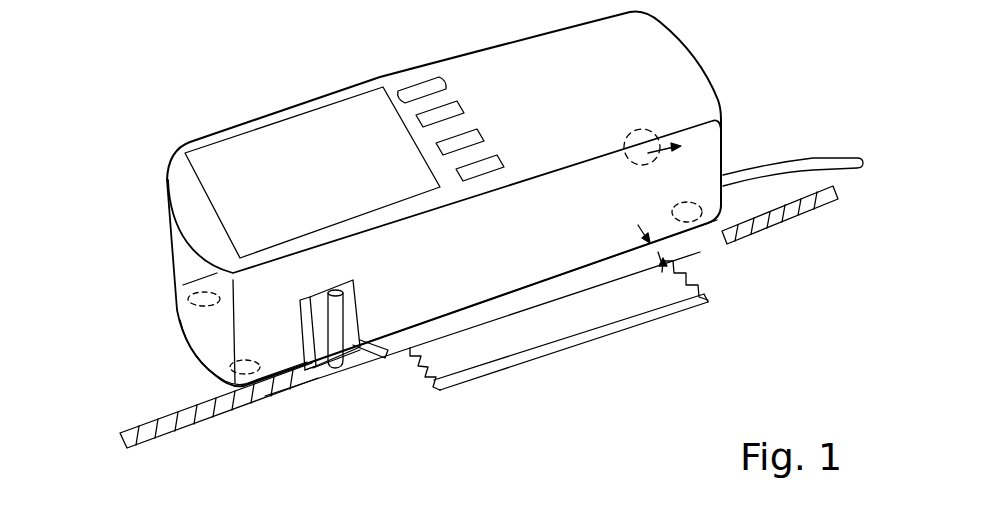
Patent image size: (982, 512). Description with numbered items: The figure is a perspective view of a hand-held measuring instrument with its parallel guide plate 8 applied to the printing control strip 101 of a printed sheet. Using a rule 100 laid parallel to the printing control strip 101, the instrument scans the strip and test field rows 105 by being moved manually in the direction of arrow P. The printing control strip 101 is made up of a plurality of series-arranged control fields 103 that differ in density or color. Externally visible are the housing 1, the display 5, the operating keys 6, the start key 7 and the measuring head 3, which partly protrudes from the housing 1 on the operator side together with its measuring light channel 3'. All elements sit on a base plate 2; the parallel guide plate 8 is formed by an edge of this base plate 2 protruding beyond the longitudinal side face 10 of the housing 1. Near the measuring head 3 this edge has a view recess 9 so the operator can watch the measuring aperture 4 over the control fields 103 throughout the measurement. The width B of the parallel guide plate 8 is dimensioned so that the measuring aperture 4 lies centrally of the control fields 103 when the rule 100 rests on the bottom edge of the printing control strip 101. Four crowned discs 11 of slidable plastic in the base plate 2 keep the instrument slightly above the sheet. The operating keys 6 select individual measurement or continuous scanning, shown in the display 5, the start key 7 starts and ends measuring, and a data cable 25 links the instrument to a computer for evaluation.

The housing 1 is at (658, 58).
The base plate 2 is at (203, 353).
The measuring head 3 is at (373, 309).
The measuring light channel 3' is at (383, 357).
The measuring aperture 4 is at (345, 372).
The display 5 is at (258, 165).
The operating keys 6 is at (485, 157).
The start key 7 is at (428, 84).
The parallel guide plate 8 is at (467, 317).
The view recess 9 is at (323, 373).
The longitudinal side face 10 is at (545, 220).
The crowned discs 11 is at (230, 360).
The data cable 25 is at (817, 156).
The rule 100 is at (557, 333).
The printing control strip 101 is at (168, 417).
The control fields 103 is at (768, 227).
The test field rows 105 is at (118, 444).
The arrow P is at (362, 55).
The width of the parallel guide plate B is at (683, 253).